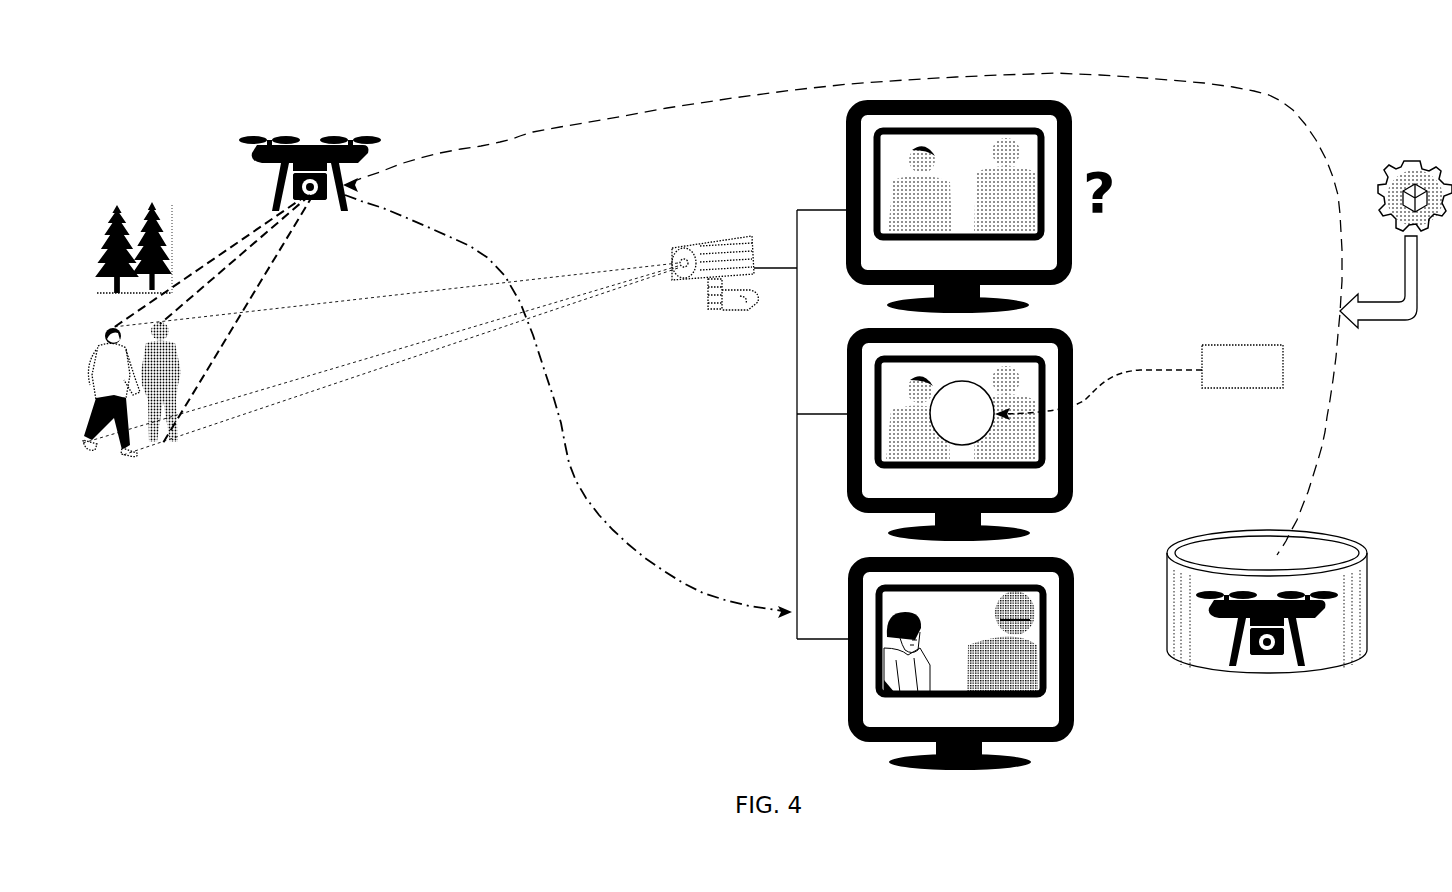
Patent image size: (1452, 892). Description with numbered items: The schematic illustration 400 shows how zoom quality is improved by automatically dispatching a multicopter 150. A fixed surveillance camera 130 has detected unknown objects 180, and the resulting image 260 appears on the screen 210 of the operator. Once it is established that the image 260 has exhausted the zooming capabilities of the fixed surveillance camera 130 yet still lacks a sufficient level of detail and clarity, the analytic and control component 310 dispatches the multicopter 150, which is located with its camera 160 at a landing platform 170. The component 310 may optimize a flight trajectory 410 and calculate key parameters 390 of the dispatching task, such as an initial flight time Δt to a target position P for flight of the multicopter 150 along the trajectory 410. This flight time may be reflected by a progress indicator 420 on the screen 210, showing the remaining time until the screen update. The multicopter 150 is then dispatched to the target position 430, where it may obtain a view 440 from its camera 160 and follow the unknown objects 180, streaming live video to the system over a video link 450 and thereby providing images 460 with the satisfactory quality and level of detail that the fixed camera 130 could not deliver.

The fixed surveillance camera 130 is at (690, 240).
The multicopter 150 is at (1278, 598).
The camera 160 is at (313, 200).
The landing platform 170 is at (1175, 552).
The unknown objects 180 is at (180, 367).
The screen 210 is at (846, 158).
The image 260 is at (1045, 170).
The analytic and control component 310 is at (1390, 175).
The key parameters 390 is at (1243, 390).
The schematic illustration 400 is at (1421, 91).
The flight trajectory 410 is at (1293, 110).
The progress indicator 420 is at (930, 410).
The target position 430 is at (363, 152).
The view 440 is at (240, 304).
The video link 450 is at (556, 404).
The images 460 is at (897, 648).